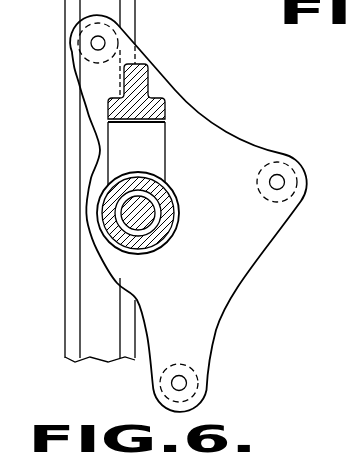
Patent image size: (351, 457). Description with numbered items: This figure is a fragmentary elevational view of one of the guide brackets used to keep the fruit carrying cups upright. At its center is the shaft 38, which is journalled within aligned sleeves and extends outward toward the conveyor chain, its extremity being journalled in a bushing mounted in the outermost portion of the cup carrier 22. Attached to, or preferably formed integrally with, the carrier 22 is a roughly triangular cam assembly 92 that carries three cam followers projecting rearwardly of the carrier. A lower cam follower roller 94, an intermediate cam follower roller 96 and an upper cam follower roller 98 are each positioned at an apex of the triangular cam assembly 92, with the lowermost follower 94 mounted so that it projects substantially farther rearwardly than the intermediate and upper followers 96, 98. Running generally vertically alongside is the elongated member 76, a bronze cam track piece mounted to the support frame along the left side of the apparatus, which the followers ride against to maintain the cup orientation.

The carrier 22 is at (150, 84).
The shaft 38 is at (148, 205).
The elongated member 76 is at (100, 312).
The cam assembly 92 is at (238, 282).
The lower cam follower roller 94 is at (209, 368).
The intermediate cam follower roller 96 is at (287, 153).
The upper cam follower roller 98 is at (134, 27).